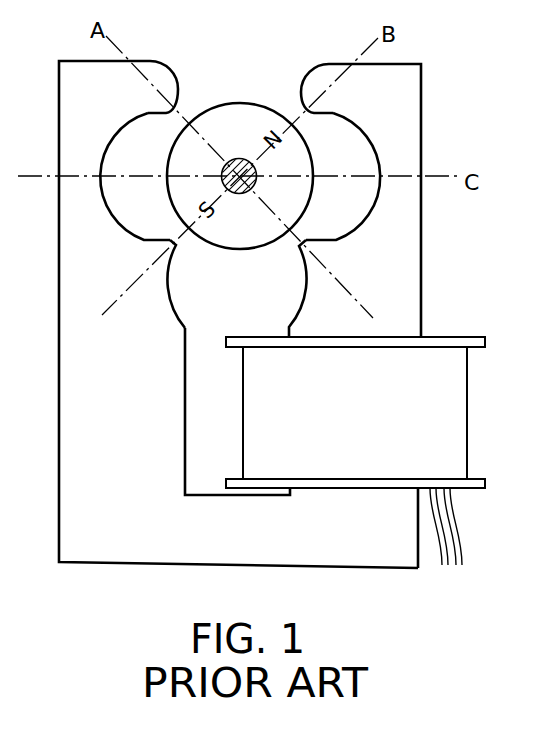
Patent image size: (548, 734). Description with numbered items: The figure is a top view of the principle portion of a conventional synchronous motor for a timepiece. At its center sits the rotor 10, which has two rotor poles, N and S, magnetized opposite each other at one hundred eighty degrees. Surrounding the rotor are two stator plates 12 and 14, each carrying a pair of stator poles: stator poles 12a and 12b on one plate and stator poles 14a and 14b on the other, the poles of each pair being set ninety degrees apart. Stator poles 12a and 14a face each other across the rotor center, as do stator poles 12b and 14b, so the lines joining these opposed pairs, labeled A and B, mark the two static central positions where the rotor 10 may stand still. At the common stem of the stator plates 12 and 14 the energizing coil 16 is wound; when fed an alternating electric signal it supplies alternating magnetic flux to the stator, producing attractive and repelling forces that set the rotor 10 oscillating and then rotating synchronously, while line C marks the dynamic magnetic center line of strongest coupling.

The rotor 10 is at (235, 107).
The stator plate 12 is at (418, 250).
The stator pole 12a is at (298, 251).
The stator pole 12b is at (306, 92).
The stator plate 14 is at (70, 231).
The stator pole 14a is at (168, 88).
The stator pole 14b is at (170, 249).
The energizing coil 16 is at (460, 408).